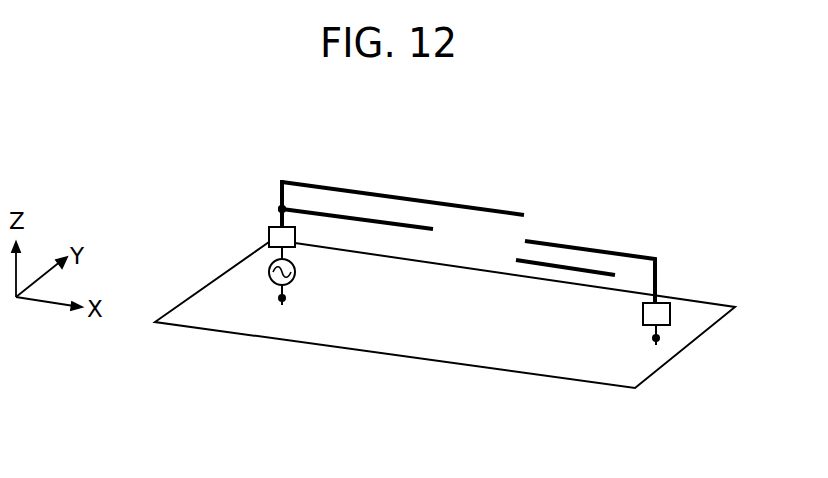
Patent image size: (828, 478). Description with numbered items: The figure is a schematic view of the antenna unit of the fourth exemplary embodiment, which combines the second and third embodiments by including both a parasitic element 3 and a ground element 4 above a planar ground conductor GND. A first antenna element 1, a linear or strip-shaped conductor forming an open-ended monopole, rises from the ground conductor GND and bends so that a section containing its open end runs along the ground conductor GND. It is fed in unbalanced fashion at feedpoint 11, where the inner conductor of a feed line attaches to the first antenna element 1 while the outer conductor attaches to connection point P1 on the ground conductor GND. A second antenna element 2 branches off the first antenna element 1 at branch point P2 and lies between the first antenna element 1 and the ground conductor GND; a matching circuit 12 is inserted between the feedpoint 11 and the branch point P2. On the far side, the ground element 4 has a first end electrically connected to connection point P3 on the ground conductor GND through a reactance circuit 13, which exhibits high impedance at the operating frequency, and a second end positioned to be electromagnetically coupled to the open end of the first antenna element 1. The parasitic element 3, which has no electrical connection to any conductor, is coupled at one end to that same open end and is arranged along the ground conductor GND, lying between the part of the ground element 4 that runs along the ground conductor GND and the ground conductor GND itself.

The first antenna element 1 is at (305, 180).
The second antenna element 2 is at (412, 225).
The parasitic element 3 is at (560, 268).
The ground element 4 is at (640, 258).
The feedpoint 11 is at (268, 272).
The matching circuit 12 is at (268, 232).
The reactance circuit 13 is at (660, 303).
The connection point P1 is at (282, 305).
The branch point P2 is at (278, 208).
The connection point P3 is at (656, 343).
The ground conductor GND is at (568, 362).